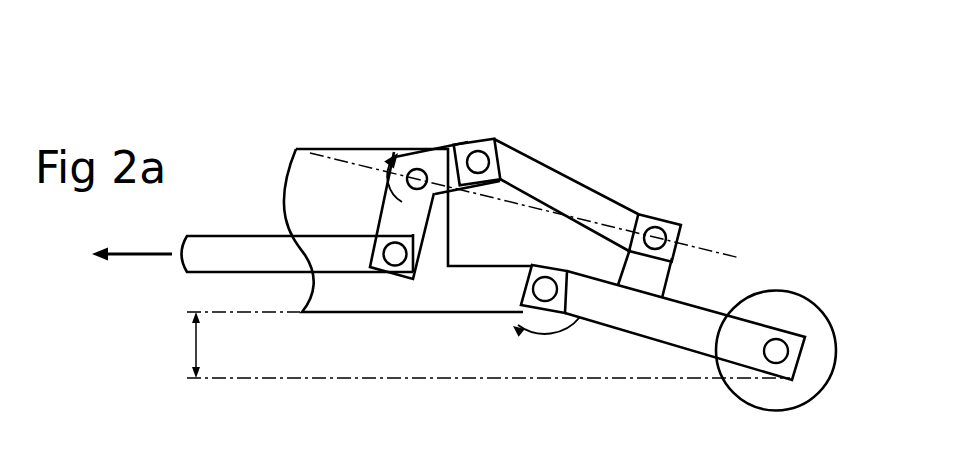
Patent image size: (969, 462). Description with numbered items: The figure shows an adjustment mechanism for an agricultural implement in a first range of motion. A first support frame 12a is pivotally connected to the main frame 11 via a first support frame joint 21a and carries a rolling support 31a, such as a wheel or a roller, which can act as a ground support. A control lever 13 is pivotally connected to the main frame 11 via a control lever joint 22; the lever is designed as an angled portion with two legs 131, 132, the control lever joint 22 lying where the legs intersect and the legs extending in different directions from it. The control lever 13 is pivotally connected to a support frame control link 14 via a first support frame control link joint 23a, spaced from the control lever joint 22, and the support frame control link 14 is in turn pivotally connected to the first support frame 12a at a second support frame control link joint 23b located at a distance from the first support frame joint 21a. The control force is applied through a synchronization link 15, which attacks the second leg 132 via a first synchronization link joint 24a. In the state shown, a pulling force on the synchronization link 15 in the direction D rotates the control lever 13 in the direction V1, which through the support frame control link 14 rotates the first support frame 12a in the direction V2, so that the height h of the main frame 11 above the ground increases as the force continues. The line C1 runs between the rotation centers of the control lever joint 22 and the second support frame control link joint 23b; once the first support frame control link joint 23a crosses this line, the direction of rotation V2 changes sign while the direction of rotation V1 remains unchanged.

The main frame 11 is at (446, 293).
The first support frame 12a is at (612, 312).
The control lever 13 is at (398, 211).
The support frame control link 14 is at (553, 190).
The synchronization link 15 is at (230, 257).
The first support frame joint 21a is at (545, 288).
The control lever joint 22 is at (414, 169).
The first support frame control link joint 23a is at (490, 139).
The second support frame control link joint 23b is at (655, 237).
The first synchronization link joint 24a is at (395, 256).
The rolling support 31a is at (792, 320).
The first leg 131 is at (478, 162).
The second leg 132 is at (381, 268).
The line between rotation centers C1 is at (708, 250).
The direction of rotation of the control lever V1 is at (393, 158).
The direction of rotation of the first support frame V2 is at (546, 347).
The direction D is at (132, 274).
The height h is at (476, 345).